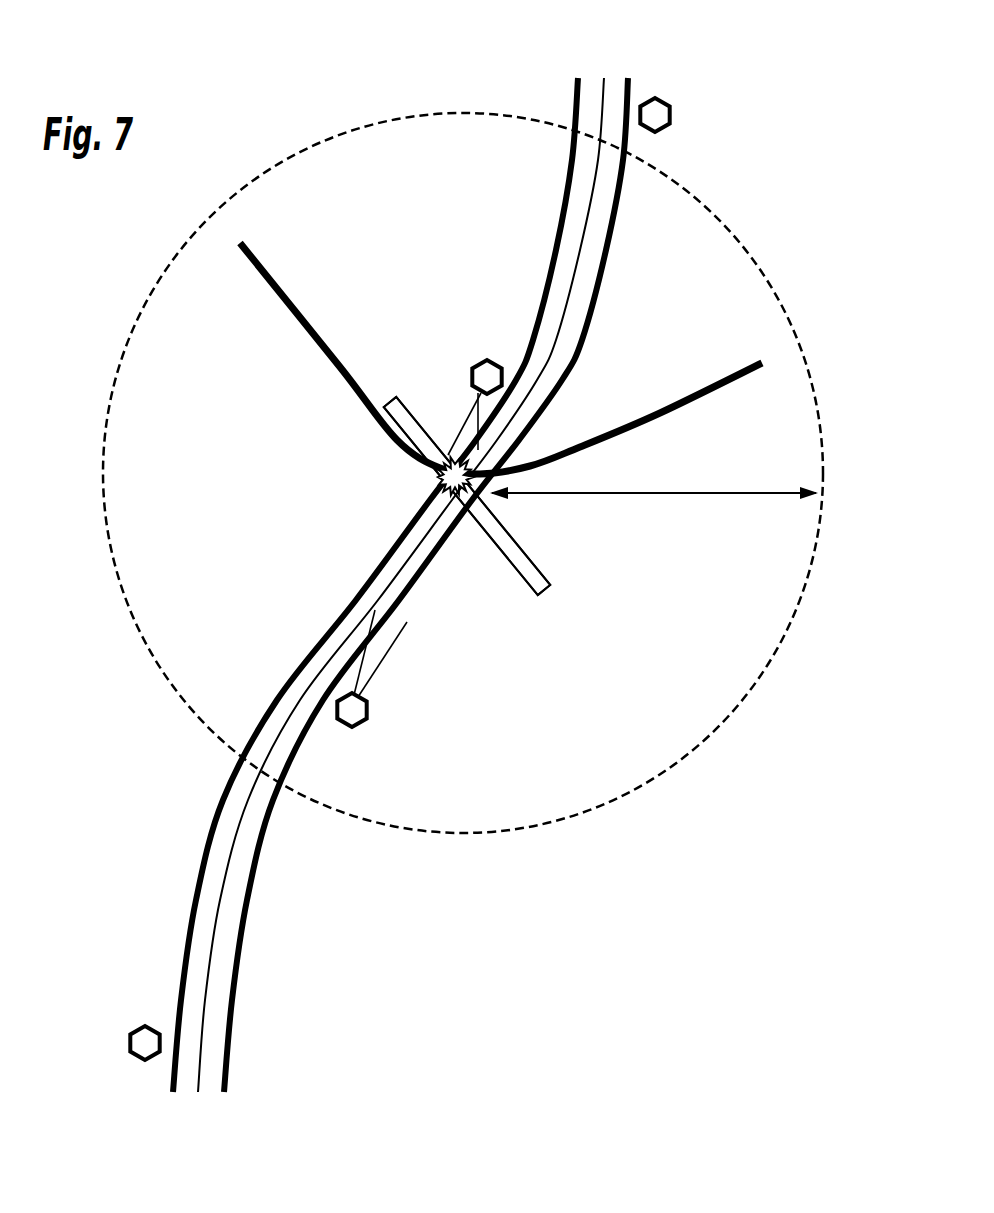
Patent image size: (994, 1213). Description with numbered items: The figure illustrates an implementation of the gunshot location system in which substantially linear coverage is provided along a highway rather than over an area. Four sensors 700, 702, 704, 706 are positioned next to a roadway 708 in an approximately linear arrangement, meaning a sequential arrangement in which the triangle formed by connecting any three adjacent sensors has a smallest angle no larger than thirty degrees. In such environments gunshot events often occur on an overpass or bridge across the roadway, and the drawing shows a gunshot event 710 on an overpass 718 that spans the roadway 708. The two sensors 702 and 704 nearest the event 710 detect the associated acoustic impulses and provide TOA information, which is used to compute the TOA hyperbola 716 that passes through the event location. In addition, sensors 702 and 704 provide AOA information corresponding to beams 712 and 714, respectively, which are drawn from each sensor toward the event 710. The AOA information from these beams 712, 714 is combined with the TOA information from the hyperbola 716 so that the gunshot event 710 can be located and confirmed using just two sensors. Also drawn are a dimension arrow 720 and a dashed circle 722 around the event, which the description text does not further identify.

The sensor 700 is at (661, 101).
The sensor 702 is at (478, 364).
The sensor 704 is at (364, 726).
The sensor 706 is at (131, 1031).
The roadway 708 is at (605, 290).
The gunshot event 710 is at (440, 483).
The beam 712 is at (460, 426).
The beam 714 is at (401, 633).
The TOA hyperbola 716 is at (284, 290).
The overpass 718 is at (560, 593).
The radius of uncertainty 720 is at (703, 495).
The circle of uncertainty 722 is at (527, 827).